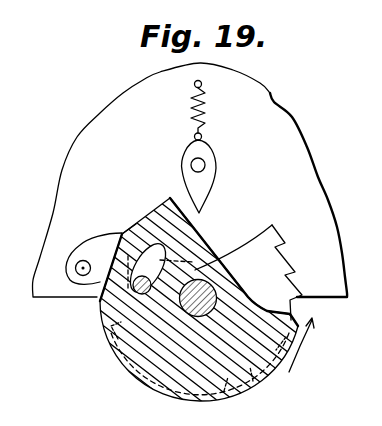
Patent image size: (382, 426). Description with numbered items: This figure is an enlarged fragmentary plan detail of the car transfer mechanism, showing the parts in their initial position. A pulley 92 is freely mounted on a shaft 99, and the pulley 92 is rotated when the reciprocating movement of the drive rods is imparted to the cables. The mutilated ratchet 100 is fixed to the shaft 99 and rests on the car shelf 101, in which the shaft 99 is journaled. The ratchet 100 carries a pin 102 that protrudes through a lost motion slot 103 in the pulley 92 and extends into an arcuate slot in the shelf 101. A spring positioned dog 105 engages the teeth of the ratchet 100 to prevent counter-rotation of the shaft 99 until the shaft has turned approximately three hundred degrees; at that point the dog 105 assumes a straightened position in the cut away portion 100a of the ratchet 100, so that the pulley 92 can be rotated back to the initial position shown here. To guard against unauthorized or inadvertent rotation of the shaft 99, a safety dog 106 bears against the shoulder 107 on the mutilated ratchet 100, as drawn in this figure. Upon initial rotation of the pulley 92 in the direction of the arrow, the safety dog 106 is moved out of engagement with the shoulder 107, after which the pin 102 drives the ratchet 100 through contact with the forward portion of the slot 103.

The pulley 92 is at (158, 371).
The shaft 99 is at (233, 253).
The mutilated ratchet 100 is at (292, 264).
The cut away portion 100a is at (110, 335).
The car shelf 101 is at (305, 156).
The pin 102 is at (173, 258).
The lost motion slot 103 is at (173, 258).
The spring positioned dog 105 is at (186, 187).
The safety dog 106 is at (93, 242).
The shoulder 107 is at (121, 235).